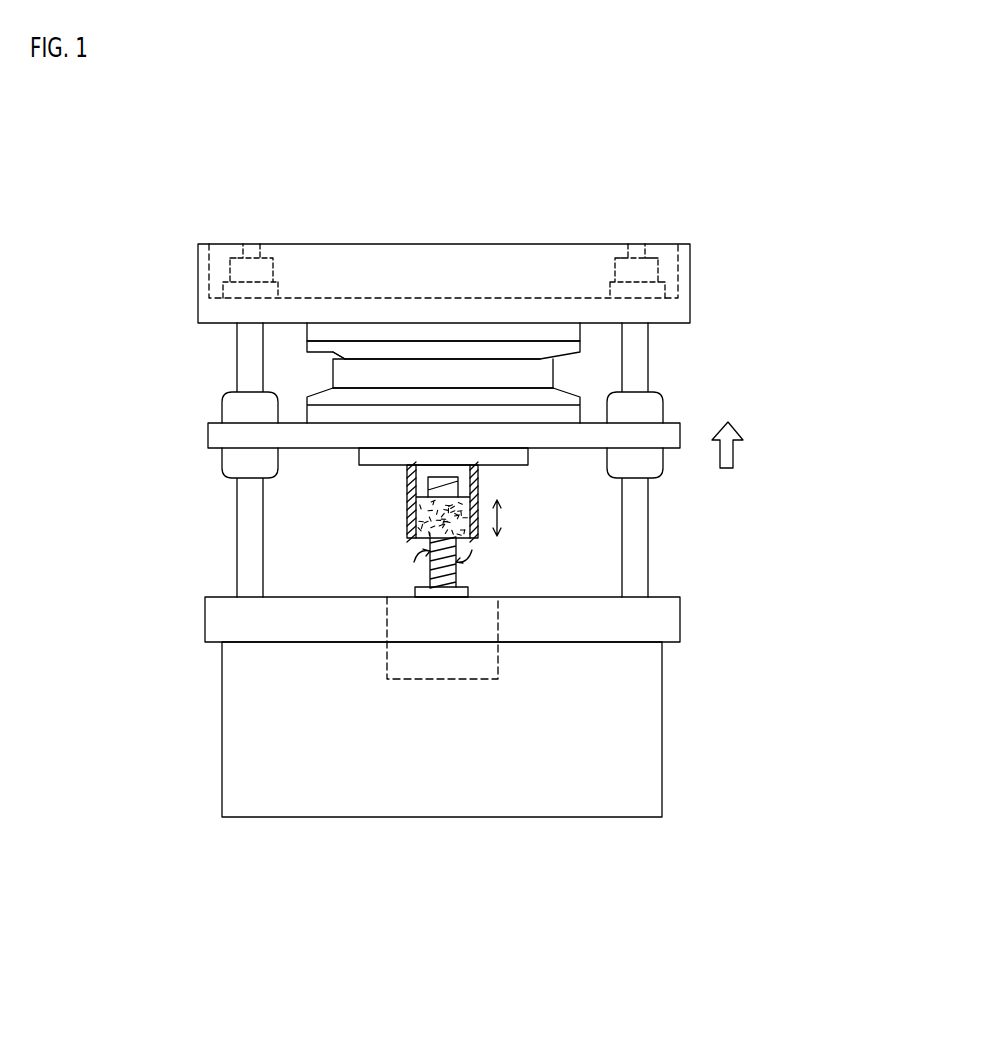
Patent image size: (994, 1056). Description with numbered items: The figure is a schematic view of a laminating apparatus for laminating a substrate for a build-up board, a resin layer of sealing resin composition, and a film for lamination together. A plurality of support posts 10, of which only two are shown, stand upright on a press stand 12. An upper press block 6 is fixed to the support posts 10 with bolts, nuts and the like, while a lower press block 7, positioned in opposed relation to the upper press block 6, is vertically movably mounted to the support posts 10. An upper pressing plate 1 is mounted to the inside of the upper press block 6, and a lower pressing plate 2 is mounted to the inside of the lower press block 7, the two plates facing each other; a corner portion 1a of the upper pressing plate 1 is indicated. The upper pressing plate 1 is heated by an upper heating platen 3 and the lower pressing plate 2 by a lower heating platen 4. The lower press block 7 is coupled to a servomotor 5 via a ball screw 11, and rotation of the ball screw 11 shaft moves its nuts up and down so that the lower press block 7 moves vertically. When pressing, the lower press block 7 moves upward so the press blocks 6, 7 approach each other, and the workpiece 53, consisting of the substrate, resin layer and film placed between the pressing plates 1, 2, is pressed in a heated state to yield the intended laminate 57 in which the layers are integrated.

The second (upper) pressing plate 1 is at (560, 348).
The corner portion of upper die 1a is at (325, 356).
The first (lower) pressing plate 2 is at (333, 398).
The second (upper) heating platen 3 is at (447, 332).
The first (lower) heating platen 4 is at (317, 413).
The servomotor 5 is at (443, 658).
The second (upper) press block 6 is at (198, 282).
The first (lower) press block 7 is at (207, 437).
The support posts 10 is at (247, 535).
The ball screw 11 is at (407, 527).
The press stand 12 is at (217, 625).
The workpiece 53 is at (540, 376).
The laminate 57 is at (587, 372).